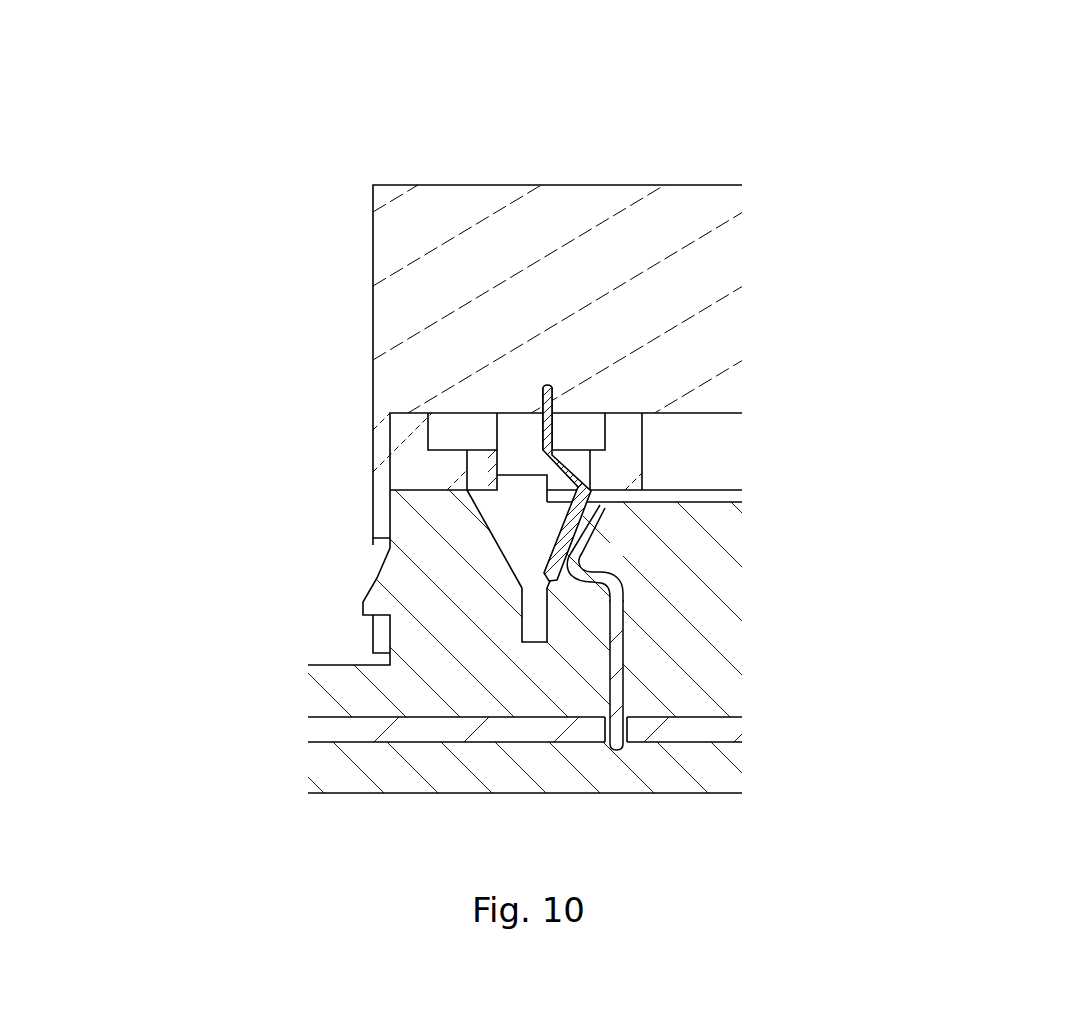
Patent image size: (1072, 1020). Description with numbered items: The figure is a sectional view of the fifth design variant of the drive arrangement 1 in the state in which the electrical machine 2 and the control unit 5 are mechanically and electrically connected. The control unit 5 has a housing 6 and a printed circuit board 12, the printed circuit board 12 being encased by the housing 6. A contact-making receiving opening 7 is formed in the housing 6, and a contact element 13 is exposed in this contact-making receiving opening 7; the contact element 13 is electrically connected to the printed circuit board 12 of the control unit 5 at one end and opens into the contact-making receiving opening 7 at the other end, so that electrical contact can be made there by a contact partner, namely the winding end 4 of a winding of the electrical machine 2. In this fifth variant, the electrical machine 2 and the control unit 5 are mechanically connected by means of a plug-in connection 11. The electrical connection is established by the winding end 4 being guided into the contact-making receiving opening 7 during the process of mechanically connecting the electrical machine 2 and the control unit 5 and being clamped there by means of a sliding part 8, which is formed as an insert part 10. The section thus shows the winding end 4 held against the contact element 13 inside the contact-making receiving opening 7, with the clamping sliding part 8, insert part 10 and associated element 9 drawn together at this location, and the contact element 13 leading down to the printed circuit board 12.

The drive arrangement 1 is at (262, 135).
The electrical machine 2 is at (797, 247).
The winding end 4 is at (597, 518).
The control unit 5 is at (797, 625).
The housing 6 is at (482, 598).
The contact-making receiving opening 7 is at (523, 572).
The sliding part 8 is at (525, 493).
The contact section 9 is at (547, 417).
The insert part 10 is at (534, 615).
The plug-in connection 11 is at (352, 609).
The printed circuit board 12 is at (478, 730).
The contact element 13 is at (610, 658).